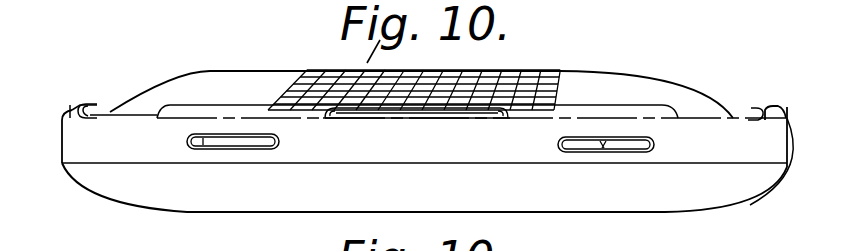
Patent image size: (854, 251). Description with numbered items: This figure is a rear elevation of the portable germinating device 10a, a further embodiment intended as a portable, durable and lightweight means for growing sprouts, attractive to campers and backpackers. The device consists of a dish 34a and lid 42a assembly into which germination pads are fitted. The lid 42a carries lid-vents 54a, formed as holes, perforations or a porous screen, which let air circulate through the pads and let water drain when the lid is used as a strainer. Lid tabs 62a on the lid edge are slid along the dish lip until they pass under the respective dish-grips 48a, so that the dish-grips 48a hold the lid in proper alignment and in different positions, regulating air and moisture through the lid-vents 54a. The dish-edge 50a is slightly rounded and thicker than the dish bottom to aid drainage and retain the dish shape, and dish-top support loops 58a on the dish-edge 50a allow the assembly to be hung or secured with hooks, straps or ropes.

The portable germinating device 10a is at (151, 83).
The dish 34a is at (187, 212).
The lid 42a is at (246, 70).
The dish-grips 48a is at (65, 110).
The lid tabs 62a is at (99, 111).
The lid-vents 54a is at (513, 90).
The dish-top support loops 58a is at (617, 142).
The dish-edge 50a is at (770, 179).